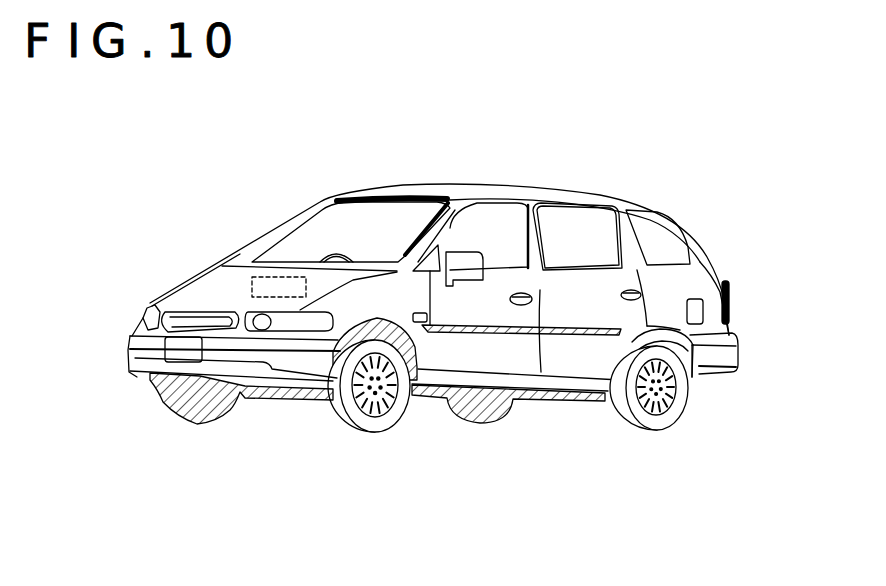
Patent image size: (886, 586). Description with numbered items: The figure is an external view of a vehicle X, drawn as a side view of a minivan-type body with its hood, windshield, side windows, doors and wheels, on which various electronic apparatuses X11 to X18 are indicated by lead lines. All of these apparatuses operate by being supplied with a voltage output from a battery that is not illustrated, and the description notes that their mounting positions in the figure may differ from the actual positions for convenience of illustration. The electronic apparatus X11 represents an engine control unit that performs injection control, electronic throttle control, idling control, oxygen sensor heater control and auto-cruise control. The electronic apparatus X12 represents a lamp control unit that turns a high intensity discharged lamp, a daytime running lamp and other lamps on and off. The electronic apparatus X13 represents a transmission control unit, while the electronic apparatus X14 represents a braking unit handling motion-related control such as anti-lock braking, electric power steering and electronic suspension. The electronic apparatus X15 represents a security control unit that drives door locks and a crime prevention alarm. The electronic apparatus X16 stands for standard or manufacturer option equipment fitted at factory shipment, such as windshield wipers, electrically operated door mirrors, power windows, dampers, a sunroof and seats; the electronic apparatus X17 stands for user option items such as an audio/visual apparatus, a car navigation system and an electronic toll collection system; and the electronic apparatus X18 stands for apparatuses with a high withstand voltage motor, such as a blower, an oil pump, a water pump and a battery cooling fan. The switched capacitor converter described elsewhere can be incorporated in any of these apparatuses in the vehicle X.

The vehicle X is at (114, 145).
The engine control unit X11 is at (225, 287).
The lamp control unit X12 is at (145, 308).
The transmission control unit X13 is at (318, 397).
The braking unit X14 is at (597, 397).
The security control unit X15 is at (647, 297).
The standard equipment electronic apparatuses X16 is at (585, 218).
The user option electronic apparatuses X17 is at (367, 253).
The high withstand voltage motor electronic apparatuses X18 is at (257, 277).